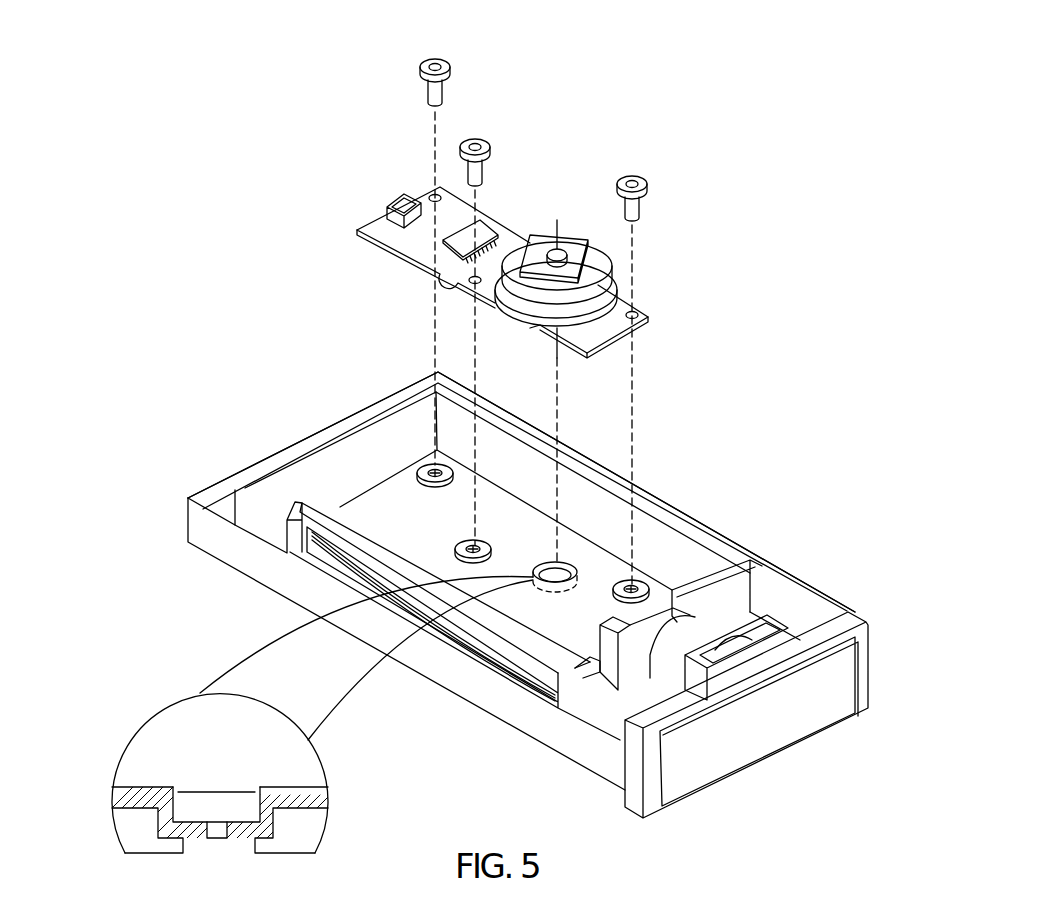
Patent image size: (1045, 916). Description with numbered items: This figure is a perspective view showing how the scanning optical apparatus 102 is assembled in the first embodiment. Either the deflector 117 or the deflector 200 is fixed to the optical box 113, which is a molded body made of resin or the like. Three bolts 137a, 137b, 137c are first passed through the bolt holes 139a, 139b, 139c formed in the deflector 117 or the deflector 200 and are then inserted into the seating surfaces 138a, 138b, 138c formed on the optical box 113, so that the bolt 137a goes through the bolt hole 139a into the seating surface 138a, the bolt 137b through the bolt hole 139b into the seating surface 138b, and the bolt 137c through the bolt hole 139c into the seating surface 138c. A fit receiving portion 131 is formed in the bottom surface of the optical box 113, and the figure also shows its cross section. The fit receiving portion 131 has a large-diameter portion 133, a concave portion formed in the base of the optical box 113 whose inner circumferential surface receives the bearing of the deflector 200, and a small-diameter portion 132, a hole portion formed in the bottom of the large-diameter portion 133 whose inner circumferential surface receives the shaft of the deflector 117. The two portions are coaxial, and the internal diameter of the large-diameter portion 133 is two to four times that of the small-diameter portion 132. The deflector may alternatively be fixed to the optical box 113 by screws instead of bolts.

The housing 102 is at (818, 545).
The optical box 113 is at (297, 438).
The deflector 117 is at (502, 376).
The deflector 200 is at (349, 196).
The fit receiving portion 131 is at (153, 692).
The small-diameter portion 132 is at (230, 834).
The large-diameter portion 133 is at (260, 802).
The bolt 137a is at (481, 140).
The bolt 137b is at (636, 177).
The bolt 137c is at (445, 60).
The seating surface 138a is at (478, 548).
The seating surface 138b is at (636, 588).
The seating surface 138c is at (432, 470).
The bolt hole 139a is at (443, 272).
The bolt hole 139b is at (635, 313).
The bolt hole 139c is at (433, 195).